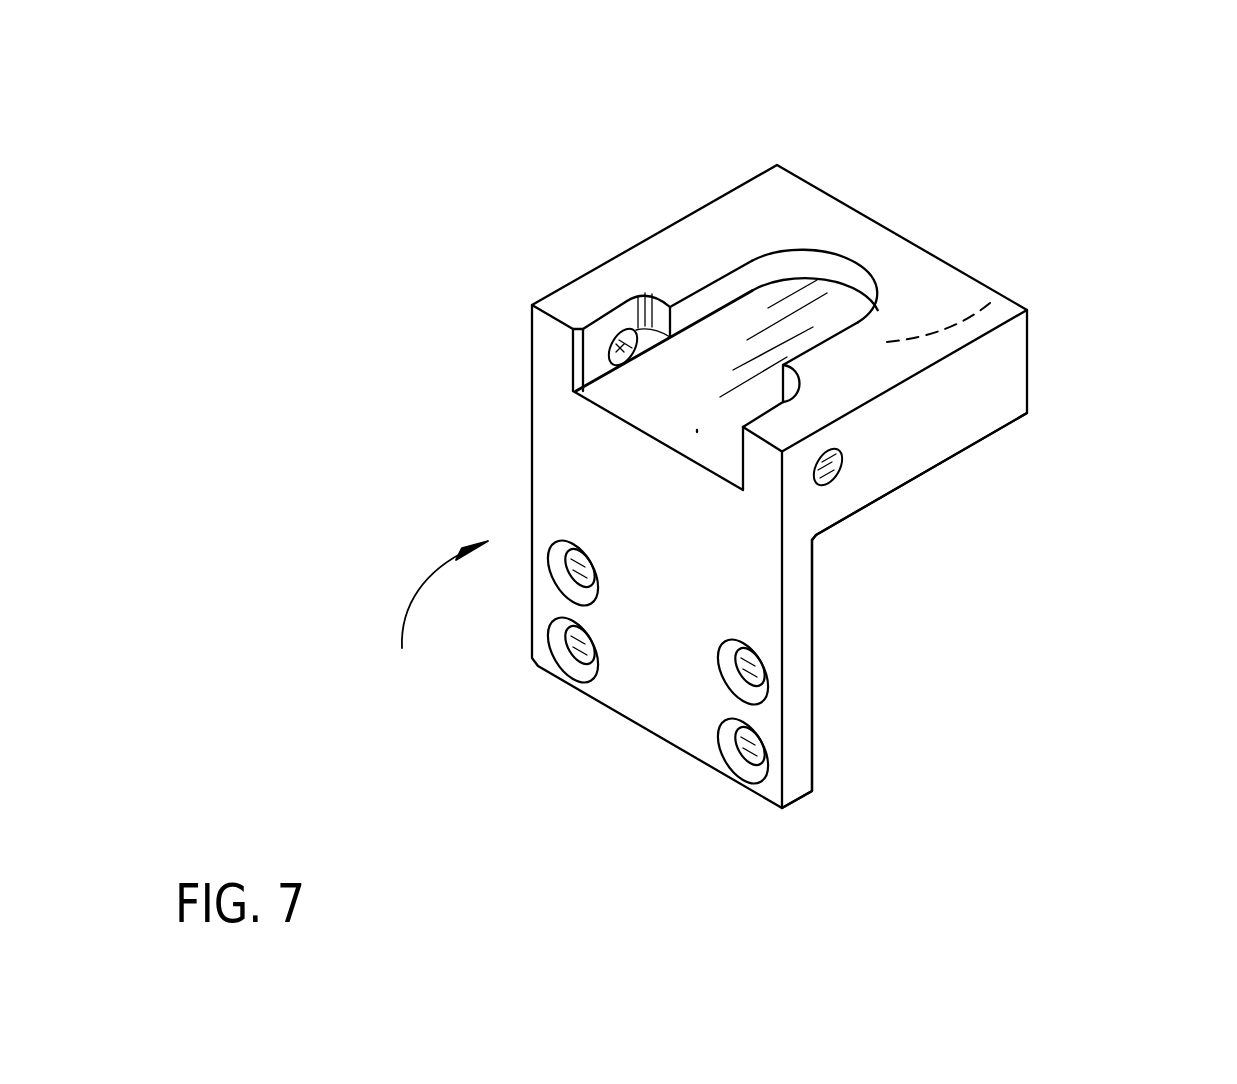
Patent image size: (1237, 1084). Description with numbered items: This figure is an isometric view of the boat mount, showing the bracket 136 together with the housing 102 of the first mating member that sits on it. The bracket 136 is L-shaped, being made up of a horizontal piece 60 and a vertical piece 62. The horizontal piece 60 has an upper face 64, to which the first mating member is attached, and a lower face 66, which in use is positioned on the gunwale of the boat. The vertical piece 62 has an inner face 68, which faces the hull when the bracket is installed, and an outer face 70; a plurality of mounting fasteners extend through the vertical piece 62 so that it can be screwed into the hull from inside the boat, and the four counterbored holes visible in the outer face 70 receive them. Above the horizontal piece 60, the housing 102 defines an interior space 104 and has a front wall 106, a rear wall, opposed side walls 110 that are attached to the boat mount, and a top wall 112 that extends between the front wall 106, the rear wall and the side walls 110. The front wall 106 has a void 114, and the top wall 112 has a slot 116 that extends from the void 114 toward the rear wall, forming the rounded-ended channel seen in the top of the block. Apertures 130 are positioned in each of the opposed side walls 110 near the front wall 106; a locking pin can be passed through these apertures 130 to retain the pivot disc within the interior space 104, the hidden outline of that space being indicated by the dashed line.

The horizontal piece 60 is at (628, 400).
The vertical piece 62 is at (657, 678).
The upper face 64 is at (703, 413).
The lower face 66 is at (903, 487).
The inner face 68 is at (817, 652).
The outer face 70 is at (663, 536).
The housing 102 is at (1027, 350).
The interior space 104 is at (998, 292).
The front wall 106 is at (545, 342).
The opposed side walls 110 is at (1000, 375).
The top wall 112 is at (933, 280).
The void 114 is at (697, 430).
The slot 116 is at (833, 308).
The apertures 130 is at (607, 353).
The bracket 136 is at (429, 616).